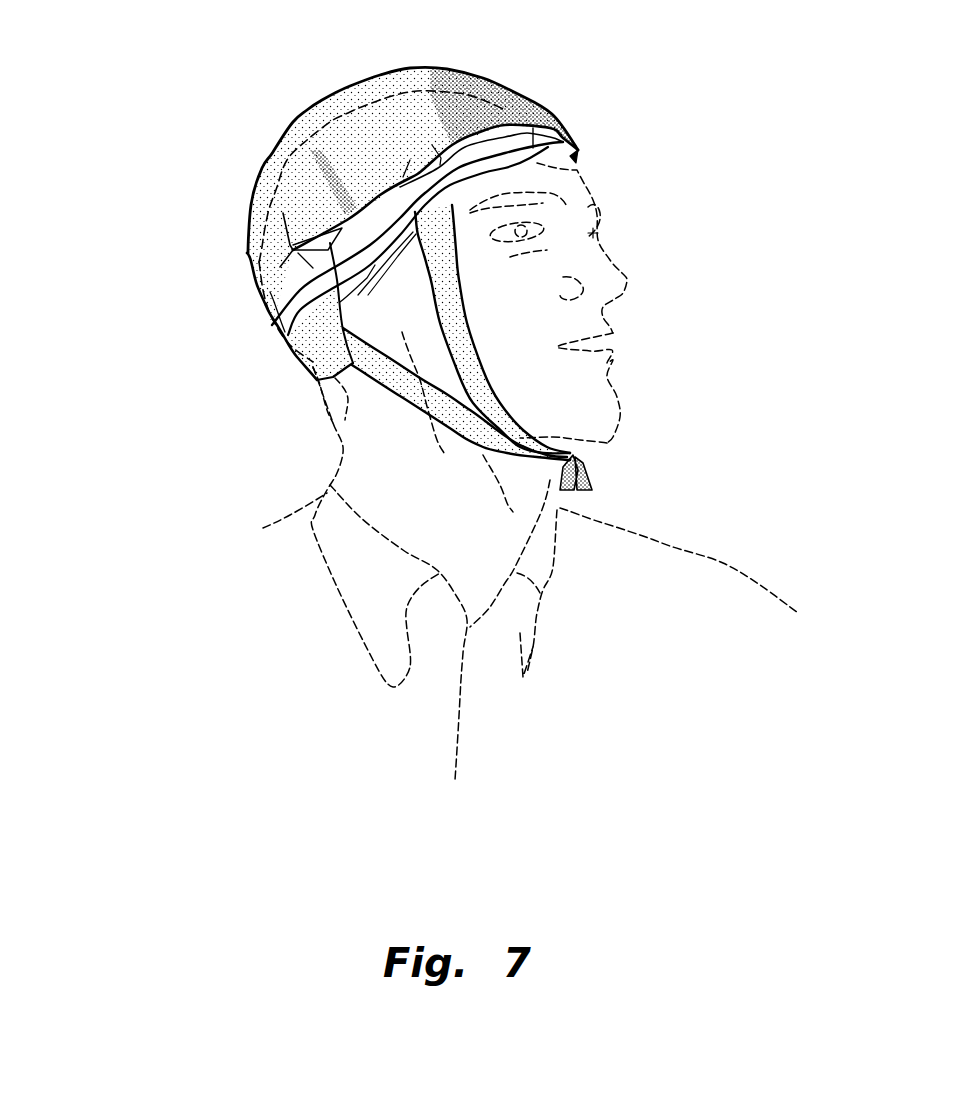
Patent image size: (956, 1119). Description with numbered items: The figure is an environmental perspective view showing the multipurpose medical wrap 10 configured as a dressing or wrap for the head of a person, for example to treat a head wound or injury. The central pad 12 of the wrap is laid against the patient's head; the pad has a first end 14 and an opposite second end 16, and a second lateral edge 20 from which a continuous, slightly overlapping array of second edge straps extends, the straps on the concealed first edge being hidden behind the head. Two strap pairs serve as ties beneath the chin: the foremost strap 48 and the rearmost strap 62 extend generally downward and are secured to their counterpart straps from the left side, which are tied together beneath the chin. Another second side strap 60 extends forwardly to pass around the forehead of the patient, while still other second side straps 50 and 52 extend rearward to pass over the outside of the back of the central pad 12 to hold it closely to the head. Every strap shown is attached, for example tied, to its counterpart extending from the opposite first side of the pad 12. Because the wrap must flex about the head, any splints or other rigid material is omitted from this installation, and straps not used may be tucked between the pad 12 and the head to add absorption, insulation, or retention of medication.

The multipurpose medical wrap 10 is at (157, 416).
The central pad 12 is at (324, 103).
The first end 14 is at (577, 170).
The second end 16 is at (333, 428).
The second lateral edge 20 is at (315, 373).
The foremost second edge strap 48 is at (485, 353).
The second side strap 50 is at (285, 300).
The second side strap 52 is at (293, 252).
The second side strap 60 is at (392, 292).
The rearmost second edge strap 62 is at (390, 400).